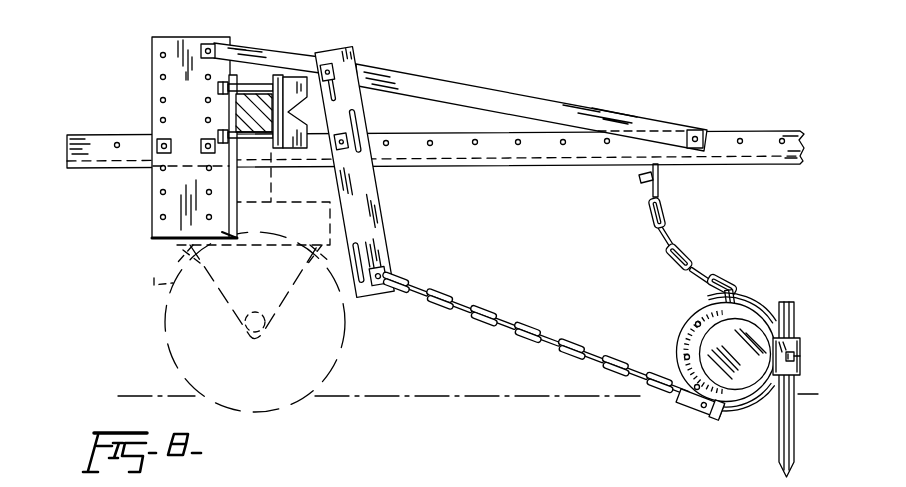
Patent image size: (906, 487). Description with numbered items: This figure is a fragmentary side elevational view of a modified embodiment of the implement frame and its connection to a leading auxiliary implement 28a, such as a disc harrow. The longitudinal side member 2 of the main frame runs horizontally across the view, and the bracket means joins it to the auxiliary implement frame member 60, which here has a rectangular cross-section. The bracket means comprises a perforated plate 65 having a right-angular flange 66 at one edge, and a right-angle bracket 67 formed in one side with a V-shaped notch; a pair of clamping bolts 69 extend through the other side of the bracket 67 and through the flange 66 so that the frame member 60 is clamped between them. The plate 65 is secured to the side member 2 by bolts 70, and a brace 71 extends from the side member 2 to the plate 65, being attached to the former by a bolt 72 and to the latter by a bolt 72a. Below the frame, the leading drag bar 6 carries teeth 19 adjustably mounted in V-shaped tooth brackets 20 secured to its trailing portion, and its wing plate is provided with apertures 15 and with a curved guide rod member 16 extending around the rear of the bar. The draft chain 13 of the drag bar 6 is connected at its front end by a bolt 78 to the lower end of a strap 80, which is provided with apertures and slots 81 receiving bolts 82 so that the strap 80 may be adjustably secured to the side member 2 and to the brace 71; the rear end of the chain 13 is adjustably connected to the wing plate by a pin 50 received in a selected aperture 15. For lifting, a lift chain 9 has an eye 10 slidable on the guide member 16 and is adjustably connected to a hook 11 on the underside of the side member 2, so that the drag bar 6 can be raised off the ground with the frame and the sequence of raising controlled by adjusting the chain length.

The longitudinal side member 2 is at (447, 168).
The leading drag bar 6 is at (744, 378).
The lift chain 9 is at (668, 216).
The eye 10 is at (734, 298).
The hook 11 is at (661, 178).
The draft chain 13 is at (532, 333).
The apertures 15 is at (697, 323).
The curved guide rod member 16 is at (760, 308).
The tooth 19 is at (782, 437).
The V-shaped tooth bracket 20 is at (800, 338).
The auxiliary implement 28a is at (187, 246).
The pin 50 is at (703, 412).
The auxiliary implement frame member 60 is at (257, 110).
The perforated plate 65 is at (150, 63).
The right-angular flange 66 is at (236, 197).
The right-angle bracket 67 is at (295, 79).
The clamping bolt 69 is at (256, 86).
The bolt 70 is at (162, 152).
The brace 71 is at (457, 95).
The bolt 72 is at (698, 132).
The bolt 72a is at (209, 44).
The bolt 78 is at (386, 270).
The strap 80 is at (379, 215).
The slots 81 is at (367, 118).
The bolt 82 is at (335, 69).